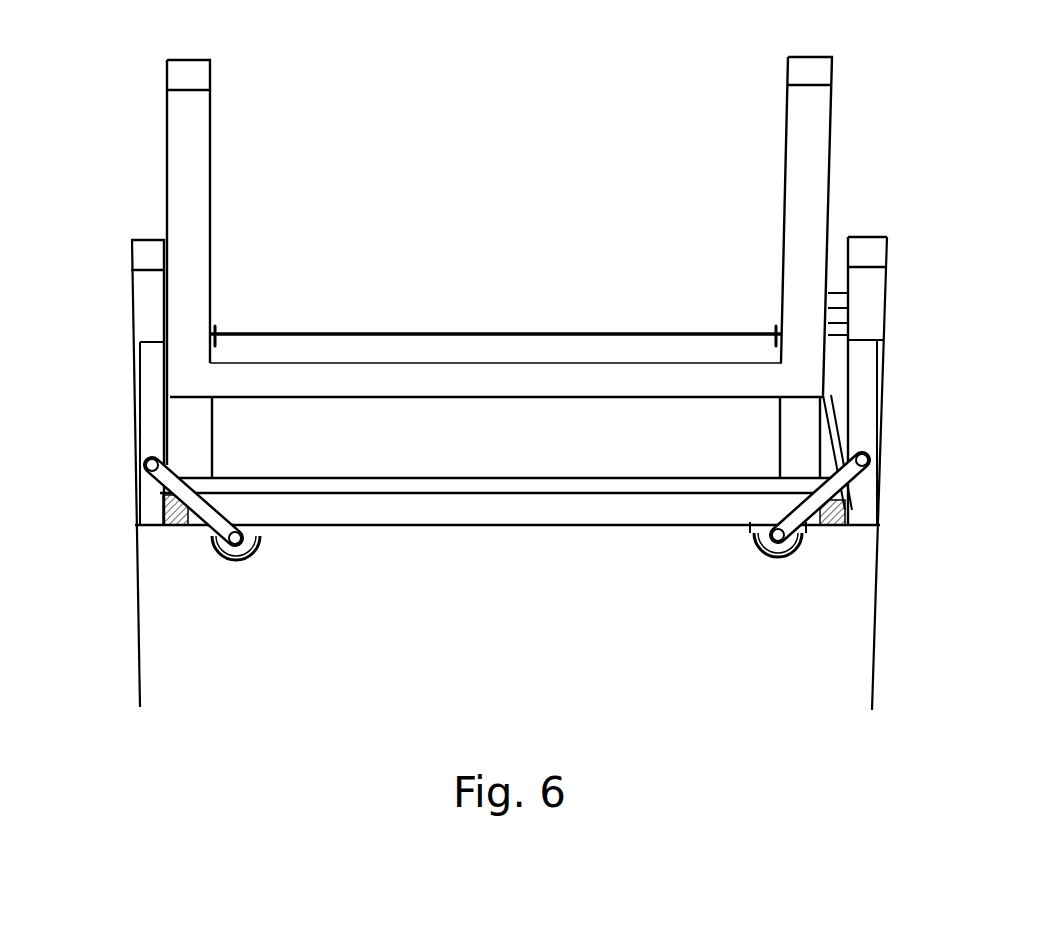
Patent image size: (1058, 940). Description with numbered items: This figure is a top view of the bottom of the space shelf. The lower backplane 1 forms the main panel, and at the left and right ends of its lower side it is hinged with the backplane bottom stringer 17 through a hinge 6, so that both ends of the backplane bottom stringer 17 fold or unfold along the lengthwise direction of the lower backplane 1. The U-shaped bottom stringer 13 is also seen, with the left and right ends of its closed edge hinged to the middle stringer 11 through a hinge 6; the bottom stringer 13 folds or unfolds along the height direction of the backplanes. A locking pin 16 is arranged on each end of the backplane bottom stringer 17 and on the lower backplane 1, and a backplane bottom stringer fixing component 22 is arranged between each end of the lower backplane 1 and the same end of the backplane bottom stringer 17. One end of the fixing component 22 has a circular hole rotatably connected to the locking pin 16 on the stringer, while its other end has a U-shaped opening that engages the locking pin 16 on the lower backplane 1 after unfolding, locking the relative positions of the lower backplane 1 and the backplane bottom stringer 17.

The lower backplane 1 is at (177, 643).
The hinge 6 is at (163, 512).
The middle stringer 11 is at (197, 437).
The bottom stringer 13 is at (805, 183).
The locking pin 16 is at (805, 540).
The backplane bottom stringer 17 is at (868, 313).
The backplane bottom stringer fixing component 22 is at (837, 480).